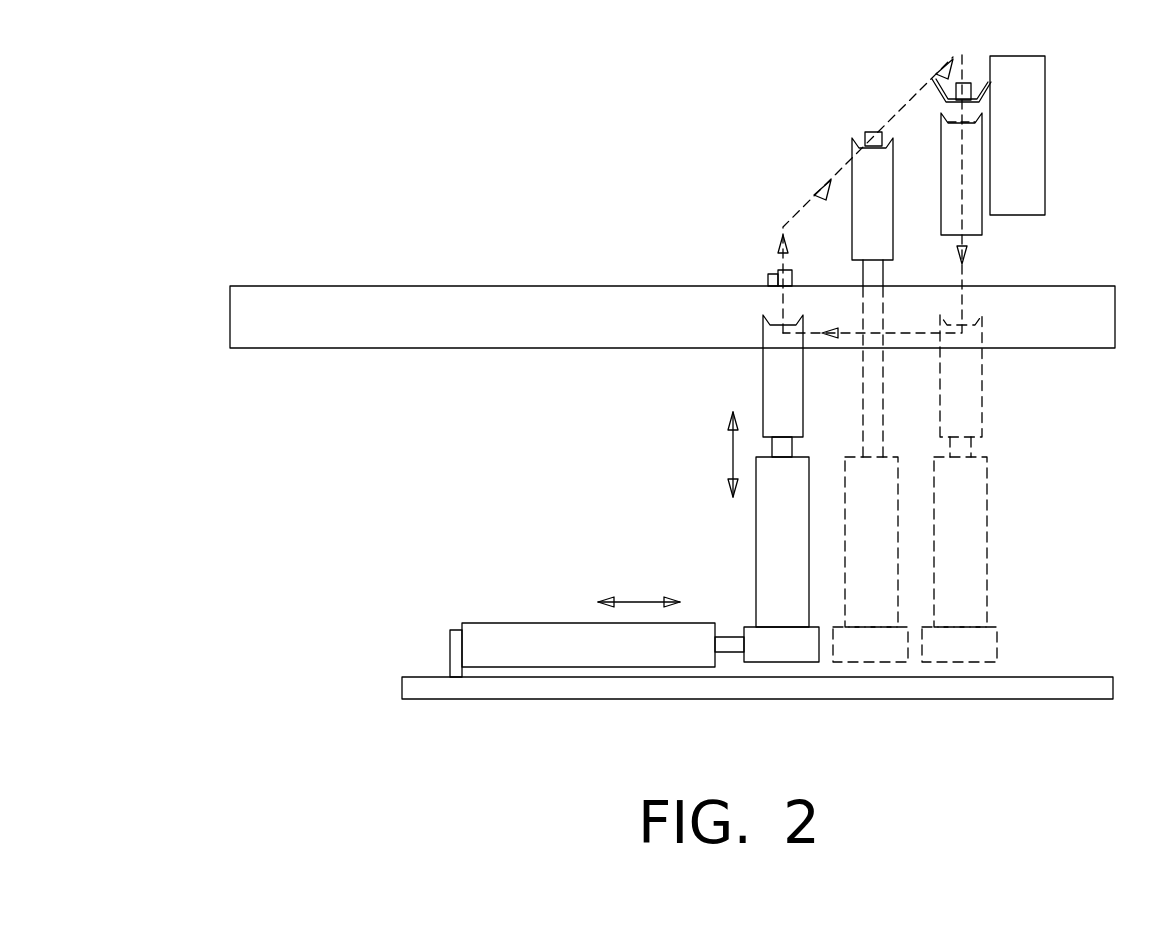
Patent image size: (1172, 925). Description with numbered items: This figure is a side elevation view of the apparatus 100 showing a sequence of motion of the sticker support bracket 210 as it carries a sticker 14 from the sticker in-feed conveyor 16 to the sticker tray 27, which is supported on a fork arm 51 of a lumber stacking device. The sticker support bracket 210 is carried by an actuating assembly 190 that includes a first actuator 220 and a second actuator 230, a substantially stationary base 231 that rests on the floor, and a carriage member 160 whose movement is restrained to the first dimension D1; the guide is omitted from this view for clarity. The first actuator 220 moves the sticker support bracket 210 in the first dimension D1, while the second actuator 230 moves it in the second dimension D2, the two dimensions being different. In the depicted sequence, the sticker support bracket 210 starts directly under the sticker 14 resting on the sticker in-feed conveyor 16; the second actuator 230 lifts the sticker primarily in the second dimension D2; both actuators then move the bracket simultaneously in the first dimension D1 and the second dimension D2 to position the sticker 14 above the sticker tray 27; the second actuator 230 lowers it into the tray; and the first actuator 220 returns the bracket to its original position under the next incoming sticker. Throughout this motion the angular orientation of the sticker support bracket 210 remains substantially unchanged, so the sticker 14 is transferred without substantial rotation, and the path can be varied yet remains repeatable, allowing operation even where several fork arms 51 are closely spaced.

The apparatus 100 is at (665, 167).
The sticker in-feed conveyor 16 is at (567, 287).
The sticker 14 is at (965, 83).
The sticker tray 27 is at (943, 92).
The fork arm 51 is at (1035, 130).
The sticker support bracket 210 is at (768, 380).
The second actuator 230 is at (756, 560).
The carriage member 160 is at (778, 650).
The first actuator 220 is at (530, 628).
The base 231 is at (1060, 680).
The actuating assembly 190 is at (540, 558).
The first dimension D1 is at (643, 602).
The second dimension D2 is at (732, 453).